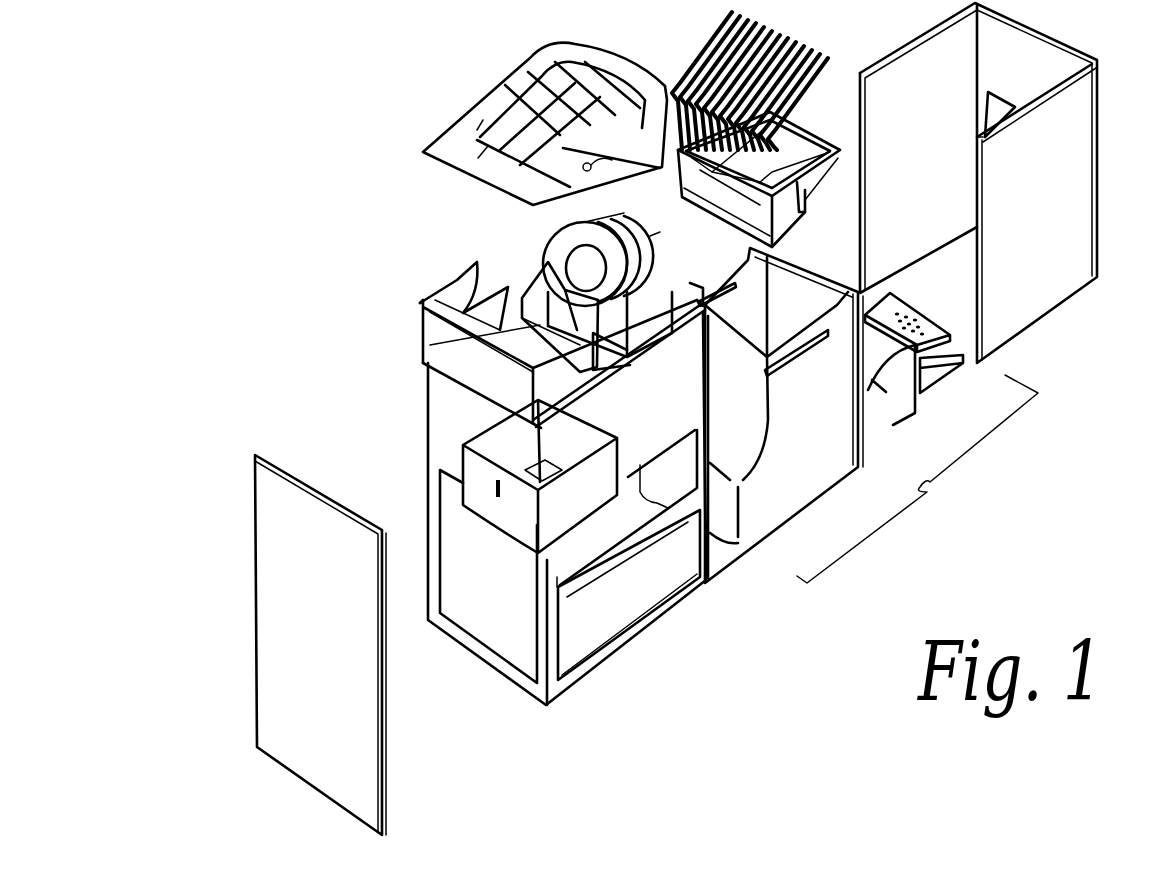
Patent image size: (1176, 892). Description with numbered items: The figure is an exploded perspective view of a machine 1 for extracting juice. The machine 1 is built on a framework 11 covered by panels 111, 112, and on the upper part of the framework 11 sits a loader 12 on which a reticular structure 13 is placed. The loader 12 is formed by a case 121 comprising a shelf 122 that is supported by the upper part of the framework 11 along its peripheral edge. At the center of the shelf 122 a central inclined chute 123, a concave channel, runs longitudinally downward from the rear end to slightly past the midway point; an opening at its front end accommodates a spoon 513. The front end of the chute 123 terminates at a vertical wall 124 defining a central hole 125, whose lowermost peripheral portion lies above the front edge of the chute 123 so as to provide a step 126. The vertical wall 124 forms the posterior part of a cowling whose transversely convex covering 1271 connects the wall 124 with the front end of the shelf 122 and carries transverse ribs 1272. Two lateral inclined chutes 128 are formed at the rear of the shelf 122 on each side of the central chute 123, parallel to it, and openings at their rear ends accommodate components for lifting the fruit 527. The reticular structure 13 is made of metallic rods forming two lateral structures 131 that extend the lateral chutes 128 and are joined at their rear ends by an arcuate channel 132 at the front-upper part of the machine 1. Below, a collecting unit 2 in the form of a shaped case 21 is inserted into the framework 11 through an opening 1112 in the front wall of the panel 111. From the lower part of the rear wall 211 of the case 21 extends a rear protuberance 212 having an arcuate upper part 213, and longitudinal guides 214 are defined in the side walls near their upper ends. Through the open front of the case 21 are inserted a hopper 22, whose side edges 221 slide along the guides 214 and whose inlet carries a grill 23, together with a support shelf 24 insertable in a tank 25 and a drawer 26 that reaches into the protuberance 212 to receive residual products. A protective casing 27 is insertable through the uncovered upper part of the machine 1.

The machine 1 is at (322, 126).
The collecting unit 2 is at (917, 479).
The framework 11 is at (555, 644).
The loader 12 is at (436, 232).
The reticular structure 13 is at (545, 111).
The shaped case 21 is at (755, 438).
The hopper 22 is at (723, 165).
The grill 23 is at (800, 30).
The support shelf 24 is at (925, 330).
The tank 25 is at (946, 384).
The drawer 26 is at (892, 412).
The protective casing 27 is at (518, 514).
The panel 111 is at (1017, 183).
The panel 112 is at (250, 623).
The case 121 is at (412, 370).
The shelf 122 is at (610, 358).
The central inclined chute 123 is at (498, 328).
The vertical wall 124 is at (560, 248).
The hole 125 is at (578, 255).
The step 126 is at (548, 262).
The lateral inclined chutes 128 is at (468, 286).
The lateral structures 131 is at (498, 86).
The arcuate channel 132 is at (612, 60).
The rear wall 211 is at (735, 400).
The rear protuberance 212 is at (765, 520).
The arcuate upper part 213 is at (735, 452).
The longitudinal guides 214 is at (738, 292).
The side edges 221 is at (805, 193).
The spoon 513 is at (548, 279).
The components for lifting the fruit 527 is at (440, 300).
The opening 1112 is at (1008, 109).
The covering 1271 is at (668, 260).
The transverse ribs 1272 is at (646, 232).